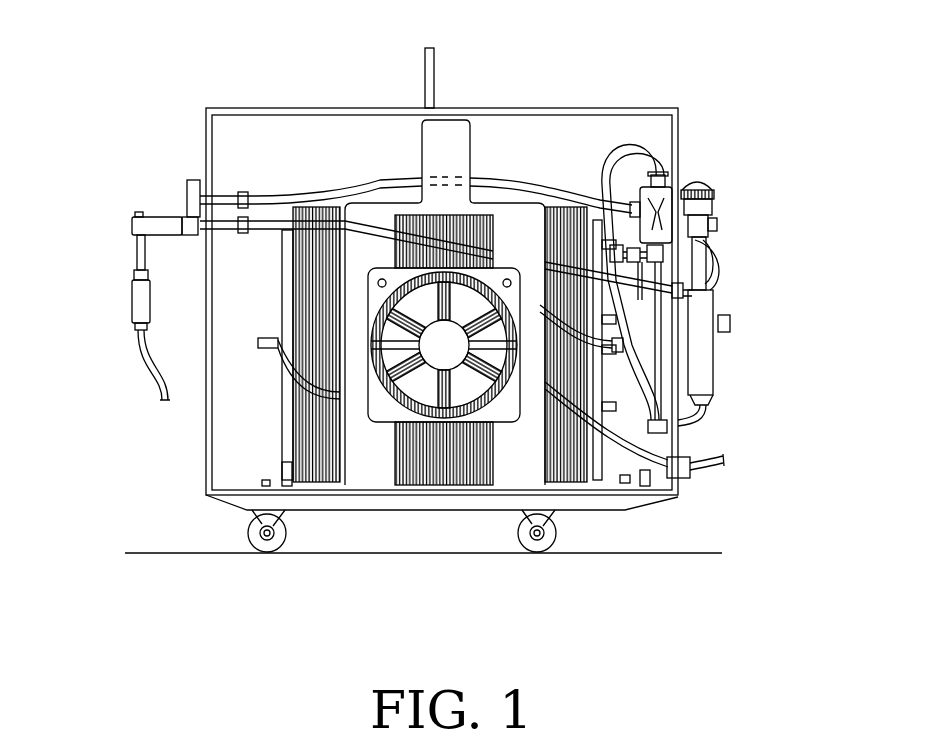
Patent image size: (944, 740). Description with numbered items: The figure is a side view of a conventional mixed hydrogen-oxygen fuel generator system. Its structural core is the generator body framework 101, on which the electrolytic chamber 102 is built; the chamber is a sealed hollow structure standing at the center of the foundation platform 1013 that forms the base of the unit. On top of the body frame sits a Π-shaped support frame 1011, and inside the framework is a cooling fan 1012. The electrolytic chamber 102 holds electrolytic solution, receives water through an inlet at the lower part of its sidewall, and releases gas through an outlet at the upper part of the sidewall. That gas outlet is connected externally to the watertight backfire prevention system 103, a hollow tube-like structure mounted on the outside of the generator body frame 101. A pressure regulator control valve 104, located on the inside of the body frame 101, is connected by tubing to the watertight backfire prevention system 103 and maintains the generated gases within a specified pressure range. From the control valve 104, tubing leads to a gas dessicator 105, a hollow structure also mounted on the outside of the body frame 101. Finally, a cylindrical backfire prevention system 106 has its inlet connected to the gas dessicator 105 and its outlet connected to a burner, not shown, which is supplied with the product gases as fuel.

The generator body framework 101 is at (271, 108).
The electrolytic chamber 102 is at (285, 302).
The watertight backfire prevention system 103 is at (698, 176).
The pressure regulator control valve 104 is at (636, 175).
The gas dessicator 105 is at (698, 260).
The cylindrical backfire prevention system 106 is at (138, 299).
The Π-shaped support frame 1011 is at (523, 225).
The cooling fan 1012 is at (510, 412).
The foundation platform 1013 is at (405, 512).